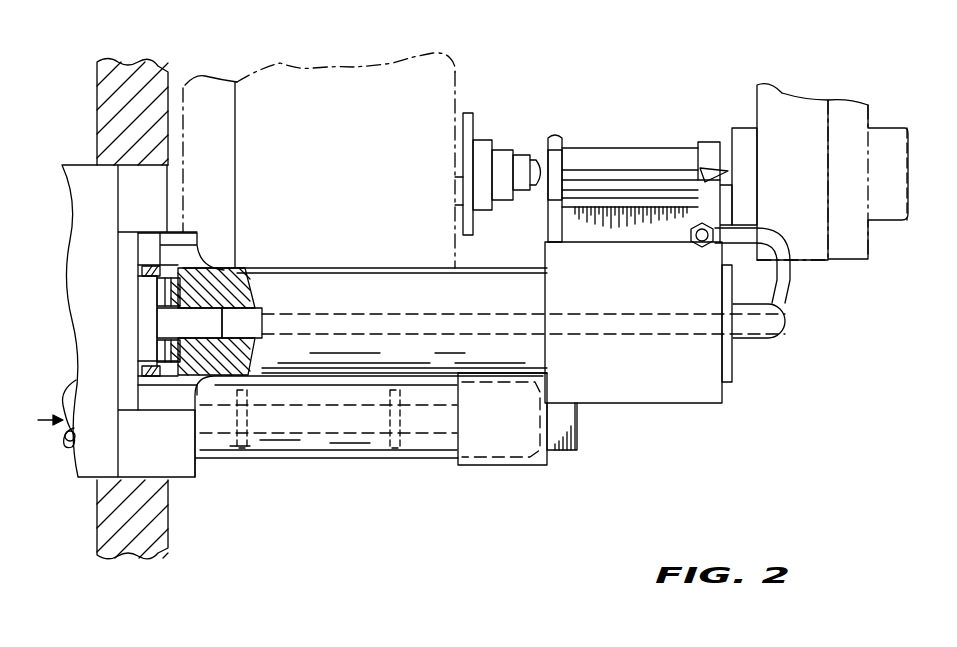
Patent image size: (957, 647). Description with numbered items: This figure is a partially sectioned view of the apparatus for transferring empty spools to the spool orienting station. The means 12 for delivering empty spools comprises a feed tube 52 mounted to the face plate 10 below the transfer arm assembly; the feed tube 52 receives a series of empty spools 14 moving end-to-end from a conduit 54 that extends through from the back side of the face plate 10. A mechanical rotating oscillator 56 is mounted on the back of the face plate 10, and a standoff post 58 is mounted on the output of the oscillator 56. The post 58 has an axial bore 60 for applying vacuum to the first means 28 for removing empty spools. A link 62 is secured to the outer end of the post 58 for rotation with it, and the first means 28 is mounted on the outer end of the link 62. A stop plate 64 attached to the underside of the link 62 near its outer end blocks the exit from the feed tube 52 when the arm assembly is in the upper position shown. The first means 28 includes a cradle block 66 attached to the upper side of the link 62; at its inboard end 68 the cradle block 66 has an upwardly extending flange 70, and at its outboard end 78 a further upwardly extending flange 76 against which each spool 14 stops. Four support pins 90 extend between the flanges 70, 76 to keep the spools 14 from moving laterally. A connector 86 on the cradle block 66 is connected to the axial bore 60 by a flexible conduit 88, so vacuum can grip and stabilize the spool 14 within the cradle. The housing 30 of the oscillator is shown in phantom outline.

The face plate 10 is at (152, 73).
The means for delivering empty spools 12 is at (385, 476).
The empty spool 14 is at (283, 428).
The first means for removing empty spools 28 is at (597, 116).
The motor housing 30 is at (447, 76).
The feed tube 52 is at (328, 462).
The conduit 54 is at (76, 387).
The mechanical rotating oscillator 56 is at (82, 176).
The standoff post 58 is at (412, 270).
The axial bore 60 is at (243, 313).
The link 62 is at (703, 384).
The stop plate 64 is at (578, 441).
The cradle block 66 is at (560, 224).
The inboard end 68 is at (553, 203).
The upwardly extending flange 70 is at (552, 134).
The further upwardly extending flange 76 is at (707, 142).
The outboard end 78 is at (731, 209).
The connector 86 is at (703, 249).
The flexible conduit 88 is at (793, 284).
The support pins 90 is at (631, 150).